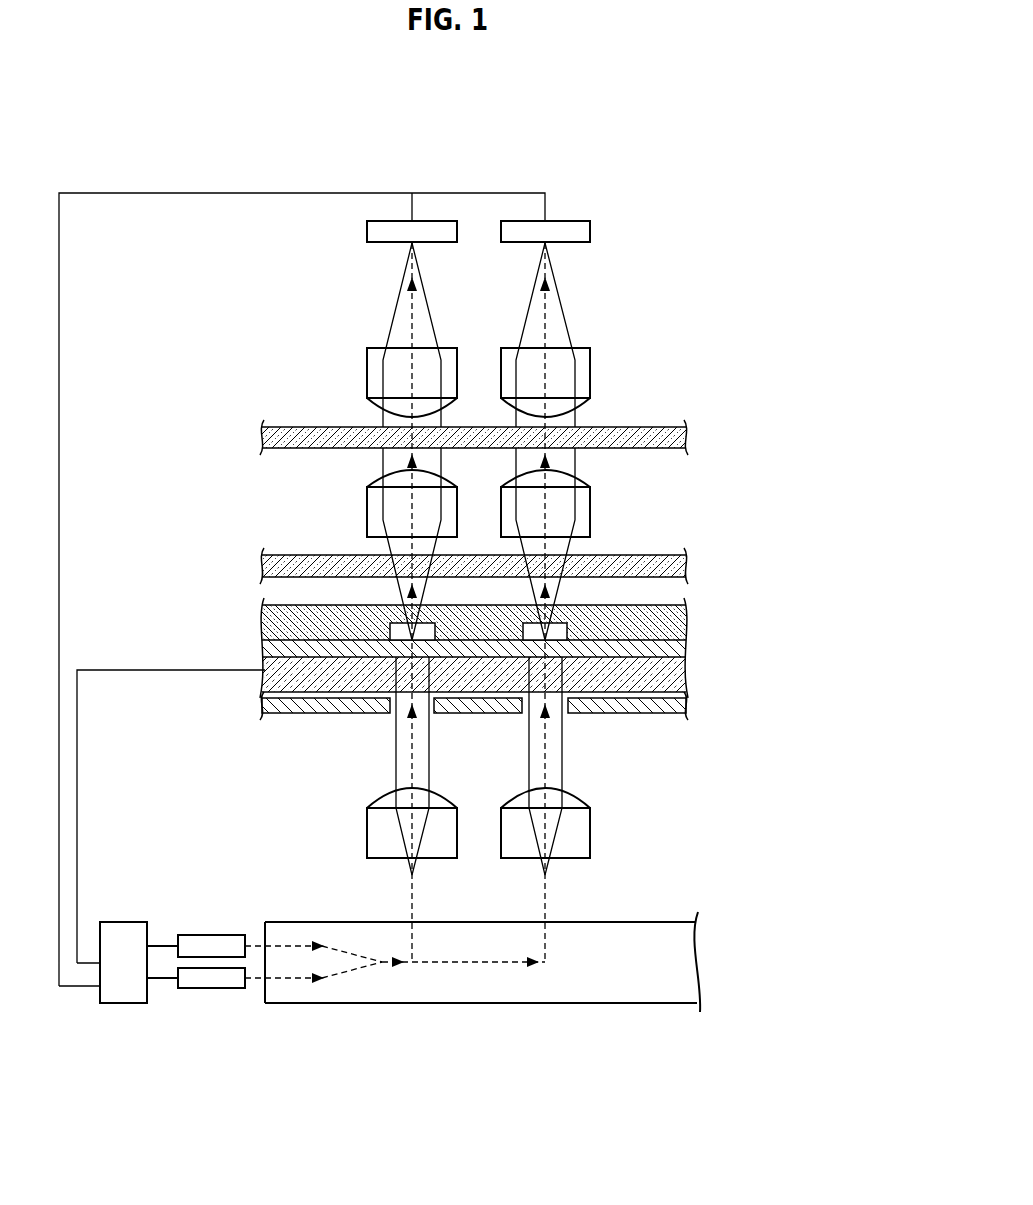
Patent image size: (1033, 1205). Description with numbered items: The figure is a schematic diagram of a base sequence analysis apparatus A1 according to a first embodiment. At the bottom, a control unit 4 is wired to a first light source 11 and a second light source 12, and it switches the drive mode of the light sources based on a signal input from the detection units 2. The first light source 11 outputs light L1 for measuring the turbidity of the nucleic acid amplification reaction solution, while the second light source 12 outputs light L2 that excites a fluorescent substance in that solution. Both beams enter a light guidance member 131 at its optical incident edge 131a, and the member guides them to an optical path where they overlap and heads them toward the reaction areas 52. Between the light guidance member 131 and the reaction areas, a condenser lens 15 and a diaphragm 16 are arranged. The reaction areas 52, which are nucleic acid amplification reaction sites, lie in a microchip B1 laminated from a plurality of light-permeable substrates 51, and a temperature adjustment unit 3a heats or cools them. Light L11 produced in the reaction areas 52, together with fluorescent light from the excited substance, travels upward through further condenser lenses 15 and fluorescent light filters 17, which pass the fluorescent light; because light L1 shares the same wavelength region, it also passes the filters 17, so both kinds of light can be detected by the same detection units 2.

The base sequence analysis apparatus A1 is at (618, 60).
The detection units 2 is at (528, 226).
The condenser lens 15 is at (372, 378).
The fluorescent light filters 17 is at (730, 568).
The microchip B1 is at (463, 647).
The substrates 51 is at (268, 648).
The reaction areas 52 is at (568, 634).
The temperature adjustment unit 3a is at (557, 691).
The diaphragm 16 is at (262, 705).
The second light source 12 is at (205, 942).
The first light source 11 is at (210, 990).
The control unit 4 is at (122, 992).
The light guidance member 131 is at (620, 990).
The optical incident edge 131a is at (262, 965).
The light L1 is at (292, 985).
The light L2 is at (285, 946).
The light L11 is at (408, 600).